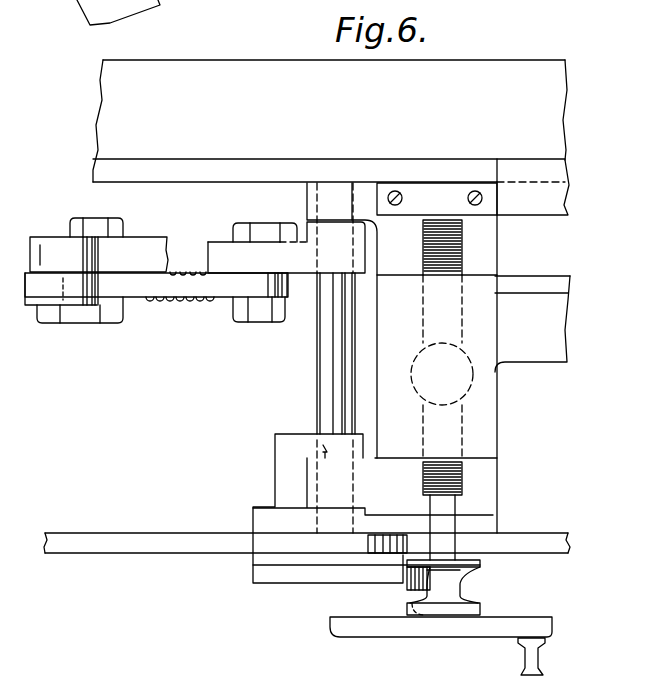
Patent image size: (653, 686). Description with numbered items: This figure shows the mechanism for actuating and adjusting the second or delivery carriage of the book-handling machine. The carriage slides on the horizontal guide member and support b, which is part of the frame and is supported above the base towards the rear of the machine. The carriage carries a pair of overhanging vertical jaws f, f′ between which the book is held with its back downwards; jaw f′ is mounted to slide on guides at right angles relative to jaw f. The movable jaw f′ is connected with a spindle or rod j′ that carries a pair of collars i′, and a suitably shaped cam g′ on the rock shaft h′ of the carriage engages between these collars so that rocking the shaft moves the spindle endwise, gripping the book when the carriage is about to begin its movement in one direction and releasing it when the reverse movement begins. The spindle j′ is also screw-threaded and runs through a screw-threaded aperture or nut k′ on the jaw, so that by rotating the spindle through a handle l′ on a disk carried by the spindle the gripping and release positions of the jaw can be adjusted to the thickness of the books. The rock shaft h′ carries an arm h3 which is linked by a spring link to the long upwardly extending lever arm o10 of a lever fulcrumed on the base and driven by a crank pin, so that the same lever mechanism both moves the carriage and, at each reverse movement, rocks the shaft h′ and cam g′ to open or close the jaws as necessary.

The horizontal guide member and support b is at (330, 121).
The lever arm o10 is at (142, 245).
The arm on rocking shaft h3 is at (222, 250).
The rock shaft h′ is at (330, 357).
The screw-threaded aperture or nut k′ is at (413, 375).
The gripping jaw f is at (542, 203).
The relatively movable gripping jaw f′ is at (537, 350).
The spindle j′ is at (447, 545).
The collars i′ is at (467, 603).
The cam g′ is at (410, 592).
The handle l′ is at (525, 657).